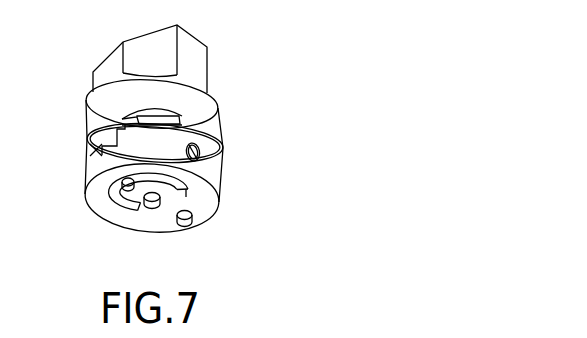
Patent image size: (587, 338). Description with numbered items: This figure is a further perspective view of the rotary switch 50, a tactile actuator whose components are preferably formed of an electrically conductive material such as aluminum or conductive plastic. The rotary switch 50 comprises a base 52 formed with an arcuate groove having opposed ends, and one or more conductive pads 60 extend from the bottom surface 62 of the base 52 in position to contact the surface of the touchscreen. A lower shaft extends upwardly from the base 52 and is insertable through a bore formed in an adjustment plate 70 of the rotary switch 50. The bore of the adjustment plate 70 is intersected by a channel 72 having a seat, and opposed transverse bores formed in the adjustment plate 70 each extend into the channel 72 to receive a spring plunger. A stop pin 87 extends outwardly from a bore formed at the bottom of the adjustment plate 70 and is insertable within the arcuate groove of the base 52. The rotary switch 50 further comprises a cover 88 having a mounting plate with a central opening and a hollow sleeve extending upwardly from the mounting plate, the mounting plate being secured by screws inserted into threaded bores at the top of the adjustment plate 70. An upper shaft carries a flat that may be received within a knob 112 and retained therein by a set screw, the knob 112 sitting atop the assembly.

The rotary switch 50 is at (255, 68).
The base 52 is at (76, 206).
The conductive pads 60 is at (152, 208).
The bottom surface 62 is at (204, 199).
The adjustment plate 70 is at (210, 163).
The channel 72 is at (96, 152).
The stop pin 87 is at (126, 189).
The cover 88 is at (212, 142).
The knob 112 is at (199, 43).